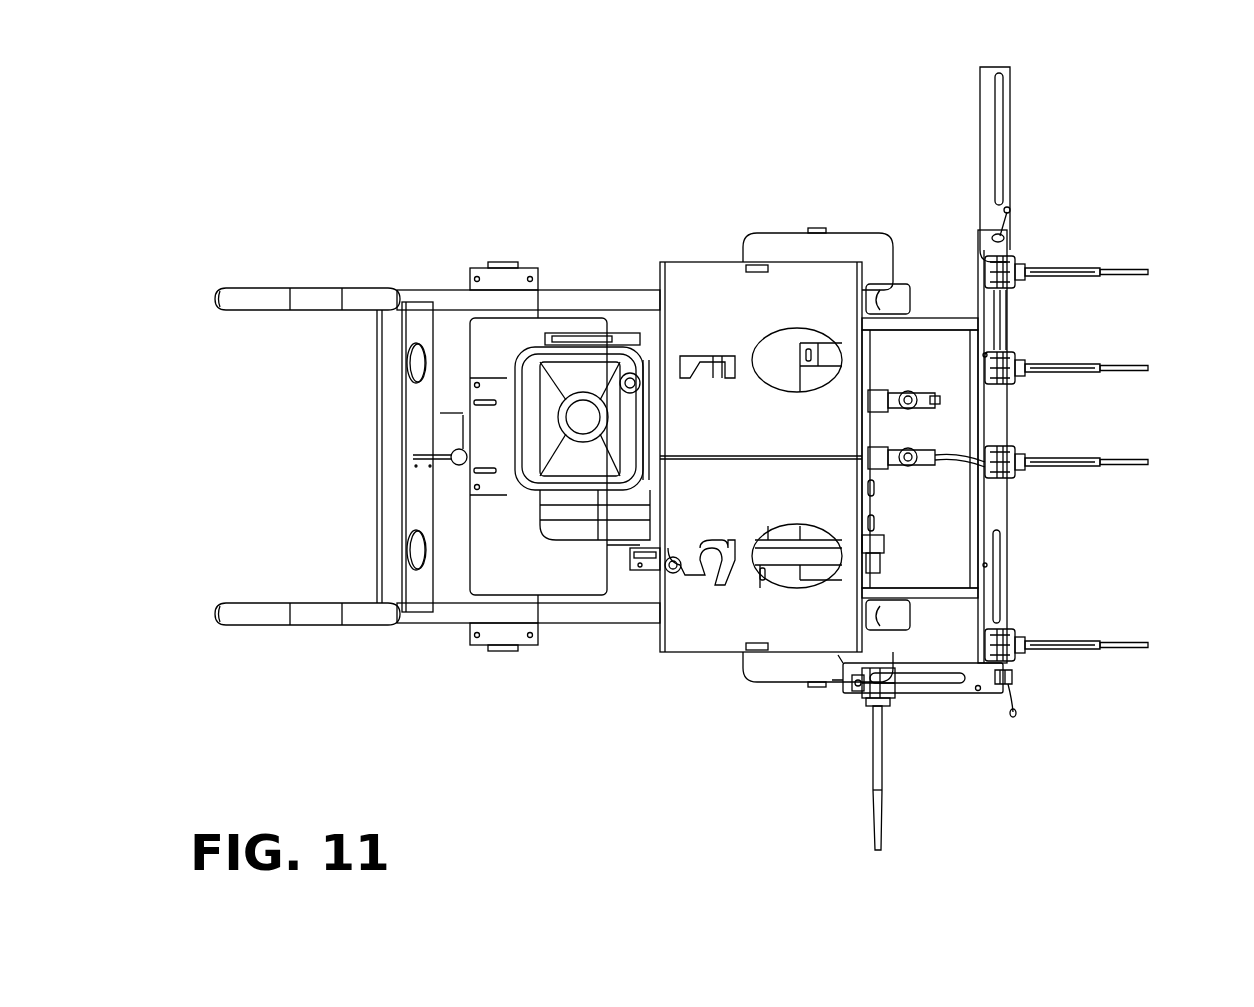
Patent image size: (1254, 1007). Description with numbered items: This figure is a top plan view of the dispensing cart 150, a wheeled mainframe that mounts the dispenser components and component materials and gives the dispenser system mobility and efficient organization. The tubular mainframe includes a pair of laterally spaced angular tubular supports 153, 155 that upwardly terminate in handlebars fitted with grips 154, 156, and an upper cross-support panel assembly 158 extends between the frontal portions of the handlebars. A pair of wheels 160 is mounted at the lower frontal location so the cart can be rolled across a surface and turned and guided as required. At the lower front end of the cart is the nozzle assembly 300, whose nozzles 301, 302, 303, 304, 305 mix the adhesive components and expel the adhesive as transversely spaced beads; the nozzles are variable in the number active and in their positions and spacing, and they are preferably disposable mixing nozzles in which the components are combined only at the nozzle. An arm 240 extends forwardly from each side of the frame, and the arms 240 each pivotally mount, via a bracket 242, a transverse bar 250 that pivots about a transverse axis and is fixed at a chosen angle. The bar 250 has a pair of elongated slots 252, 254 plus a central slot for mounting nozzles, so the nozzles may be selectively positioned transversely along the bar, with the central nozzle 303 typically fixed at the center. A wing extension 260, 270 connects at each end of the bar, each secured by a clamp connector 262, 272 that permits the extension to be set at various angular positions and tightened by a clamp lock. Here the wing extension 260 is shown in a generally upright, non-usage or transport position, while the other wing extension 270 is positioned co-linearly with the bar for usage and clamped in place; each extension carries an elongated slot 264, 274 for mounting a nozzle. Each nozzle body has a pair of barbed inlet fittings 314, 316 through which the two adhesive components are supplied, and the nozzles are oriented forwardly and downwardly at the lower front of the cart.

The cart 150 is at (545, 175).
The angular tubular support 153 is at (452, 605).
The grip 154 is at (248, 628).
The angular tubular support 155 is at (415, 295).
The grip 156 is at (255, 298).
The upper cross-support panel assembly 158 is at (418, 508).
The wheel 160 is at (762, 243).
The arm 240 is at (935, 326).
The bracket 242 is at (975, 517).
The transverse bar 250 is at (990, 297).
The elongated slot 252 is at (1003, 590).
The elongated slot 254 is at (1003, 314).
The wing extension 260 is at (915, 692).
The clamp connector 262 is at (1014, 708).
The elongated slot 264 is at (935, 683).
The wing extension 270 is at (990, 98).
The clamp connector 272 is at (1012, 218).
The elongated slot 274 is at (1003, 118).
The nozzle assembly 300 is at (1105, 200).
The nozzle 301 is at (882, 777).
The nozzle 302 is at (1085, 655).
The central nozzle 303 is at (1077, 465).
The nozzle 304 is at (1077, 372).
The nozzle 305 is at (1098, 277).
The barbed inlet fitting 314 is at (1005, 480).
The barbed inlet fitting 316 is at (1010, 357).